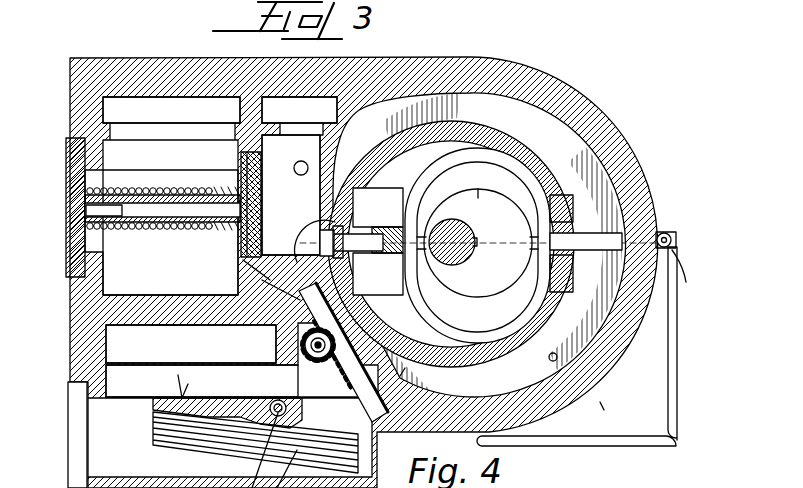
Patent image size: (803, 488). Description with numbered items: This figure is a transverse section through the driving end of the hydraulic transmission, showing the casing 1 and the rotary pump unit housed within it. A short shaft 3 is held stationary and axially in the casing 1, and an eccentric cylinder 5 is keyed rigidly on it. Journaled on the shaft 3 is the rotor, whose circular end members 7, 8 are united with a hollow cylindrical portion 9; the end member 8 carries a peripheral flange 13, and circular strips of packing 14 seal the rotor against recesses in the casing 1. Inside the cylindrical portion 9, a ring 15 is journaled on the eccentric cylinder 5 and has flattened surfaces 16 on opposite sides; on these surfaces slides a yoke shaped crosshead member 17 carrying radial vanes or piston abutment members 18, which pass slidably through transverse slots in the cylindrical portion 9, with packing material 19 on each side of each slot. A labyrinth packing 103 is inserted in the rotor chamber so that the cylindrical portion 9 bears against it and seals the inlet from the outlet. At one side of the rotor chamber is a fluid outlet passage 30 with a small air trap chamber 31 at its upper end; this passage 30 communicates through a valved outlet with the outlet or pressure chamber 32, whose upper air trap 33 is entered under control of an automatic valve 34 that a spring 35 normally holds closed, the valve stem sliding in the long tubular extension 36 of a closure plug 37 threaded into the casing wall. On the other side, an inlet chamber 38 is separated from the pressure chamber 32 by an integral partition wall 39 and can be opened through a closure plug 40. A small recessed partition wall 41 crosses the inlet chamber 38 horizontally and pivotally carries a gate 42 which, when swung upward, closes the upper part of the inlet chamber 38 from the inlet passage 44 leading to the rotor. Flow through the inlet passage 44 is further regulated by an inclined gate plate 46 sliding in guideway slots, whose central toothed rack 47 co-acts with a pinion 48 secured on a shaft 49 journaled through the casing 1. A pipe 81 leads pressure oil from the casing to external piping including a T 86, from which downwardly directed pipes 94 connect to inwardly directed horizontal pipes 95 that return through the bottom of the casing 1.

The casing 1 is at (626, 343).
The short shaft 3 is at (455, 250).
The eccentric cylinder 5 is at (478, 243).
The circular end member 7 is at (690, 232).
The circular end member 8 is at (549, 364).
The hollow cylindrical portion 9 is at (590, 411).
The peripheral flange 13 is at (270, 262).
The packing rings 14 is at (150, 395).
The ring 15 is at (496, 197).
The flattened surfaces 16 is at (440, 227).
The yoke shaped crosshead member 17 is at (432, 170).
The radial vanes or piston abutment members 18 is at (372, 258).
The packing material 19 is at (585, 310).
The fluid outlet passage 30 is at (294, 195).
The air trap chamber 31 is at (299, 110).
The outlet or pressure chamber 32 is at (103, 195).
The air trap 33 is at (171, 110).
The automatic valve 34 is at (262, 218).
The spring 35 is at (148, 228).
The tubular extension 36 is at (184, 222).
The closure plug 37 is at (66, 262).
The inlet chamber 38 is at (191, 344).
The partition wall 39 is at (172, 312).
The closure plug 40 is at (67, 452).
The recessed partition wall 41 is at (188, 384).
The gate 42 is at (250, 397).
The inlet passage 44 is at (318, 362).
The gate plate 46 is at (399, 381).
The toothed rack 47 is at (446, 366).
The pinion 48 is at (262, 280).
The shaft 49 is at (243, 260).
The pipe 81 is at (308, 166).
The T 86 is at (692, 274).
The downwardly directed pipes 94 is at (680, 355).
The horizontal pipes 95 is at (617, 436).
The labyrinth packing 103 is at (313, 228).